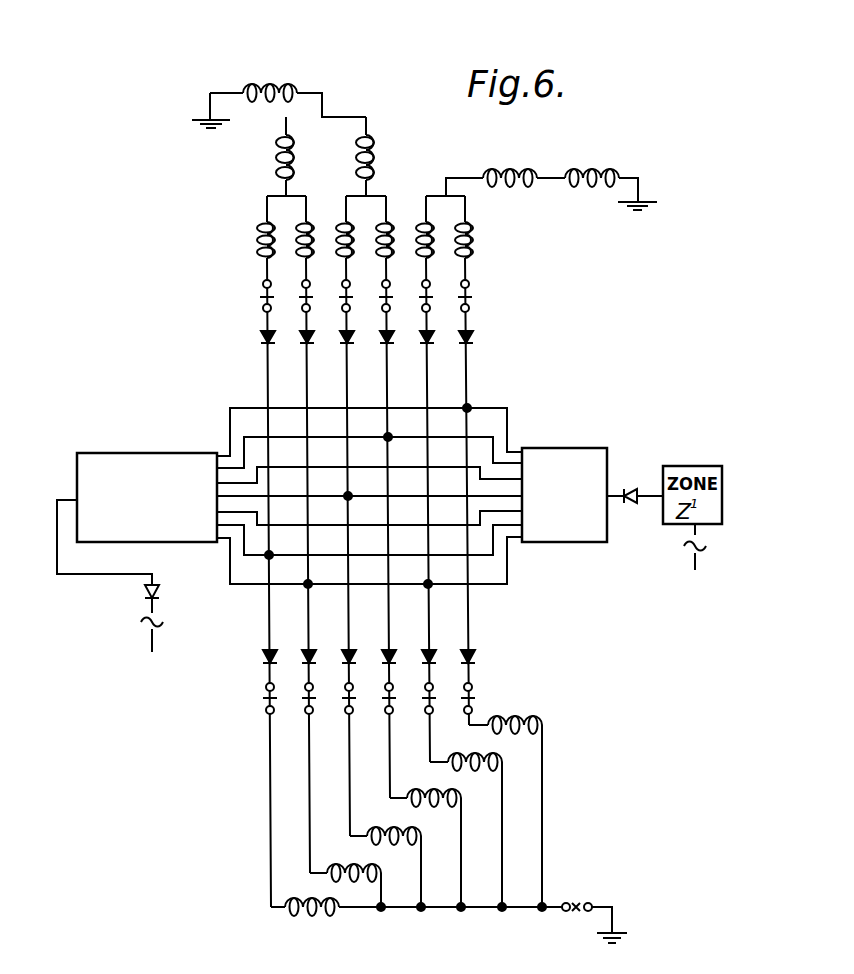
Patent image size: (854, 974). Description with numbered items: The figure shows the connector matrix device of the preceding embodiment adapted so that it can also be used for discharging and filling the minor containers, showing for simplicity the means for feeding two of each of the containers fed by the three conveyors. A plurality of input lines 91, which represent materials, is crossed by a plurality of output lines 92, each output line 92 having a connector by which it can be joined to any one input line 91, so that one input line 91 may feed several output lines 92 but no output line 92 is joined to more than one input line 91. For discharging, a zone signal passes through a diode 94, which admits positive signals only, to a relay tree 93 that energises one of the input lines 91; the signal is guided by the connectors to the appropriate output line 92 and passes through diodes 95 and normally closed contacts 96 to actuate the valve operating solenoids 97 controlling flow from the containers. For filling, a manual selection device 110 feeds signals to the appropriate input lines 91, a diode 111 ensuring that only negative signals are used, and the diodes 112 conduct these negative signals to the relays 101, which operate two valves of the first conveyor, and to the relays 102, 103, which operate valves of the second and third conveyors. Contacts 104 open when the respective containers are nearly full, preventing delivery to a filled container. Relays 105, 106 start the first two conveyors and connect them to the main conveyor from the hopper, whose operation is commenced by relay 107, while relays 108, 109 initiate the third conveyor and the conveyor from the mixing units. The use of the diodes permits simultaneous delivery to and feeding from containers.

The input lines 91 is at (490, 408).
The output lines 92 is at (268, 418).
The relay tree 93 is at (578, 450).
The diode 94 is at (627, 503).
The diodes 95 is at (263, 655).
The normally closed contacts 96 is at (265, 698).
The valve operating solenoids 97 is at (545, 717).
The relays 101 is at (302, 218).
The relays 102 is at (386, 222).
The relays 103 is at (458, 252).
The contacts 104 is at (264, 289).
The relay 105 is at (294, 150).
The relay 106 is at (373, 152).
The relay 107 is at (296, 75).
The relay 108 is at (517, 167).
The relay 109 is at (599, 167).
The manual selection device 110 is at (190, 454).
The diode 111 is at (160, 588).
The diodes 112 is at (263, 338).